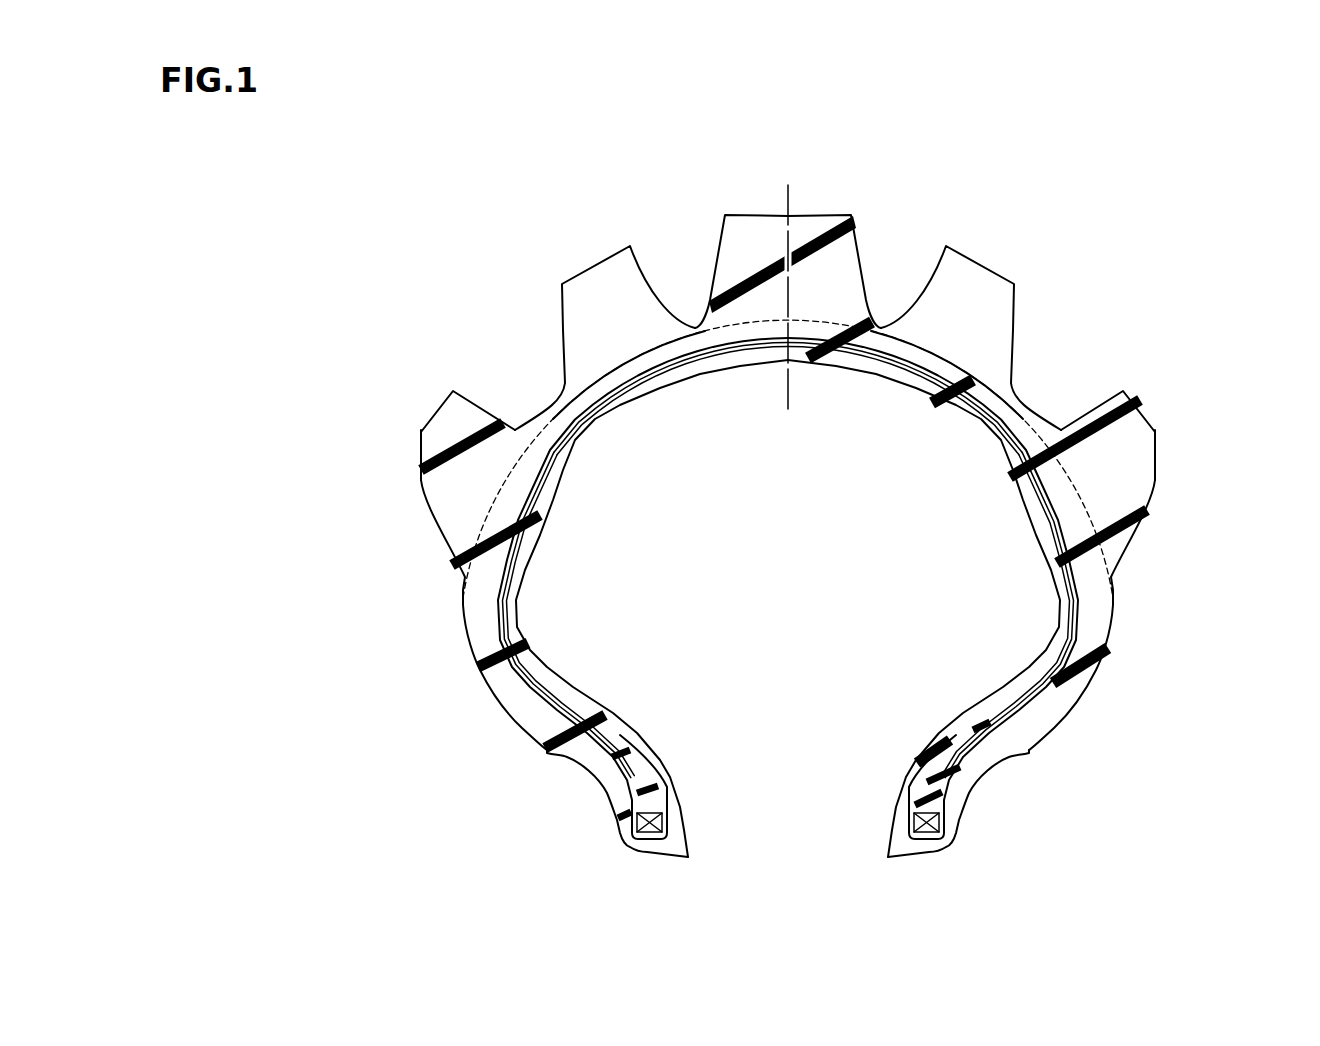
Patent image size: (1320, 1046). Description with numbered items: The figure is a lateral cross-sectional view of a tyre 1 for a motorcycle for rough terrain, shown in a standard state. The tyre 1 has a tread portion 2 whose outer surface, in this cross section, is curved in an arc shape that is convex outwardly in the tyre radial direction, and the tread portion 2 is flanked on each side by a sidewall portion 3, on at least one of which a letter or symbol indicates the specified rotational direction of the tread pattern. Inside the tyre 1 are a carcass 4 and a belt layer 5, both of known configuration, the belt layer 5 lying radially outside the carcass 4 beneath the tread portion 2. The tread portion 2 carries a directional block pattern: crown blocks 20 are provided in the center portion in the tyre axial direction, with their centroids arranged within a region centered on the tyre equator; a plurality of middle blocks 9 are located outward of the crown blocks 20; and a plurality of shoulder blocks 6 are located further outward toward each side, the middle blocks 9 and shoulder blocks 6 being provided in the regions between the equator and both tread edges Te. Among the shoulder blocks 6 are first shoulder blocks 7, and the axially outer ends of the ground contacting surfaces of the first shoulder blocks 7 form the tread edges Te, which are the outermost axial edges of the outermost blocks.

The tyre 1 is at (915, 180).
The tread portion 2 is at (677, 262).
The sidewall portion 3 is at (492, 707).
The carcass 4 is at (757, 340).
The belt layer 5 is at (866, 348).
The shoulder block 6 is at (1148, 400).
The first shoulder block 7 is at (429, 387).
The middle block 9 is at (590, 258).
The crown block 20 is at (822, 212).
The tread edge Te is at (421, 433).